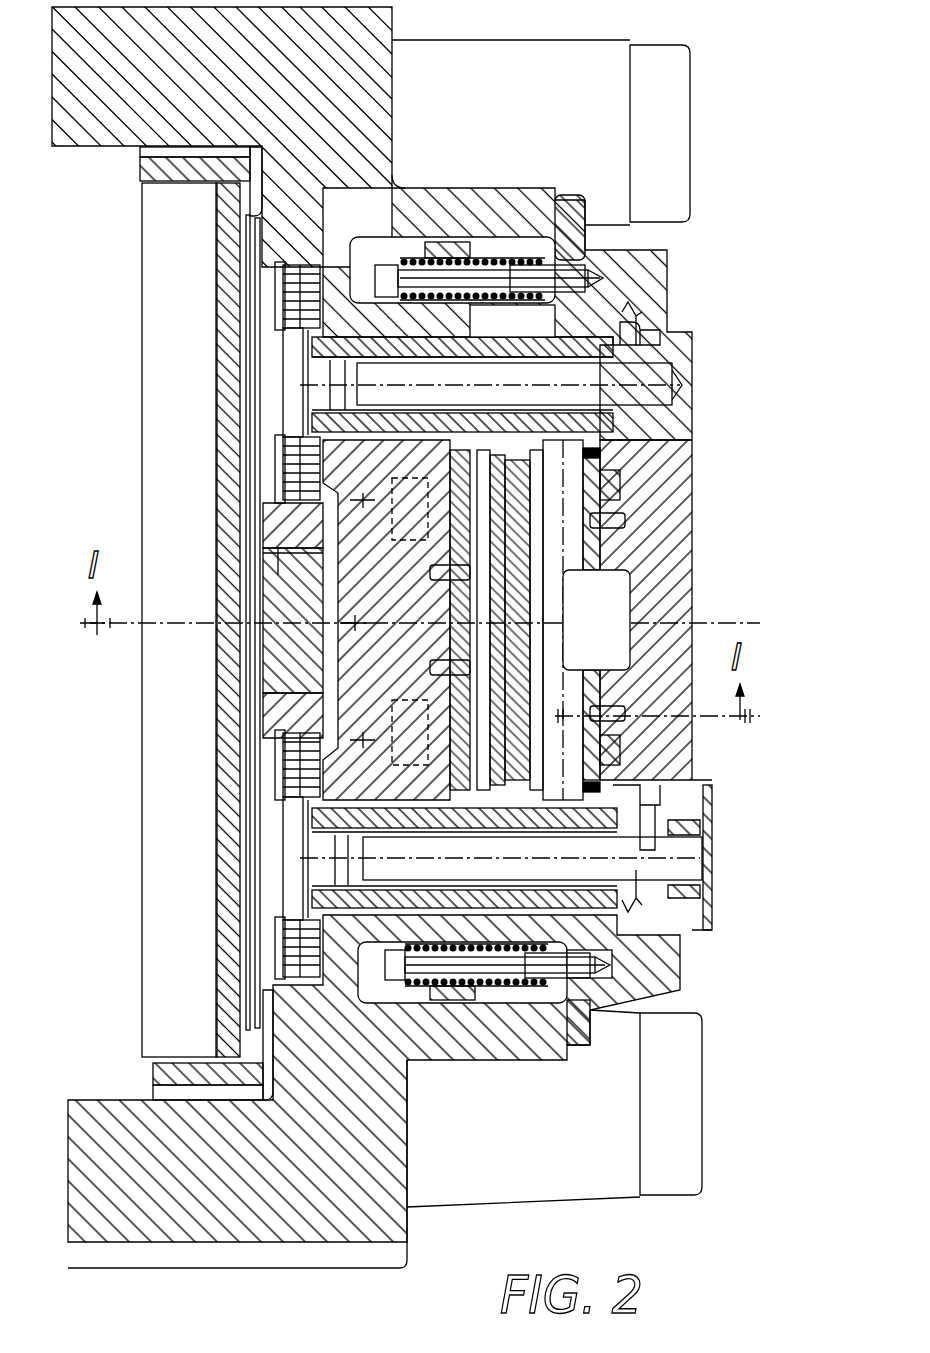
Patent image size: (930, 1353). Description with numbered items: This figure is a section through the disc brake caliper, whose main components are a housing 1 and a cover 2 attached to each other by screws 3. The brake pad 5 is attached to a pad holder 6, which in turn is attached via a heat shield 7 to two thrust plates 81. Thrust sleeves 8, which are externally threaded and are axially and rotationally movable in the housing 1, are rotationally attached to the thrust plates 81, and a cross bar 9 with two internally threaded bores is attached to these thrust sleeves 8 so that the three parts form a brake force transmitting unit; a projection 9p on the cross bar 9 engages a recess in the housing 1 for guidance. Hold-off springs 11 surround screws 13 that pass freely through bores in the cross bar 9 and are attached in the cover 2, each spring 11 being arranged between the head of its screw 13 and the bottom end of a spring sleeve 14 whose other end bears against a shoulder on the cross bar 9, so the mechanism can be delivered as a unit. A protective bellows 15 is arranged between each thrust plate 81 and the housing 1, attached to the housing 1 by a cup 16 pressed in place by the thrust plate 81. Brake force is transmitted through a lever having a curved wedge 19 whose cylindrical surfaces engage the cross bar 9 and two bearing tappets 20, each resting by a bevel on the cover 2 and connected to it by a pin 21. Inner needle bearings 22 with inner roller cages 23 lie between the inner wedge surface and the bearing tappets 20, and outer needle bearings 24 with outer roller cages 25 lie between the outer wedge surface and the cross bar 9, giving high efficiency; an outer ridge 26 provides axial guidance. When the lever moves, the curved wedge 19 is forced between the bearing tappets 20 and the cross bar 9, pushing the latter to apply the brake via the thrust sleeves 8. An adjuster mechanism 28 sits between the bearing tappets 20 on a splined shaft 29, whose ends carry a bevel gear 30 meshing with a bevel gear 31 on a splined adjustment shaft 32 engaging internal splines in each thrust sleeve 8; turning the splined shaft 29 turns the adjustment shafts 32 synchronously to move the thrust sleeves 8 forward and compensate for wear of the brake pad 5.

The housing 1 is at (64, 70).
The cover 2 is at (680, 603).
The screws 3 is at (410, 490).
The brake pad 5 is at (162, 1018).
The pad holder 6 is at (240, 990).
The heat shield 7 is at (240, 668).
The thrust sleeves 8 is at (300, 410).
The thrust plates 81 is at (262, 486).
The cross bar 9 is at (275, 532).
The projection 9p is at (300, 600).
The hold-off springs 11 is at (455, 262).
The screws 13 is at (480, 278).
The spring sleeve 14 is at (518, 265).
The protective bellows 15 is at (276, 300).
The cup 16 is at (282, 275).
The curved wedge 19 is at (500, 615).
The bearing tappets 20 is at (600, 565).
The pin 21 is at (628, 520).
The inner needle bearings 22 is at (620, 485).
The inner roller cages 23 is at (630, 612).
The outer needle bearings 24 is at (410, 540).
The outer roller cages 25 is at (432, 572).
The outer ridge 26 is at (482, 635).
The adjuster mechanism 28 is at (655, 590).
The splined shaft 29 is at (640, 485).
The bevel gear 30 is at (640, 478).
The bevel gear 31 is at (640, 316).
The splined adjustment shaft 32 is at (365, 385).